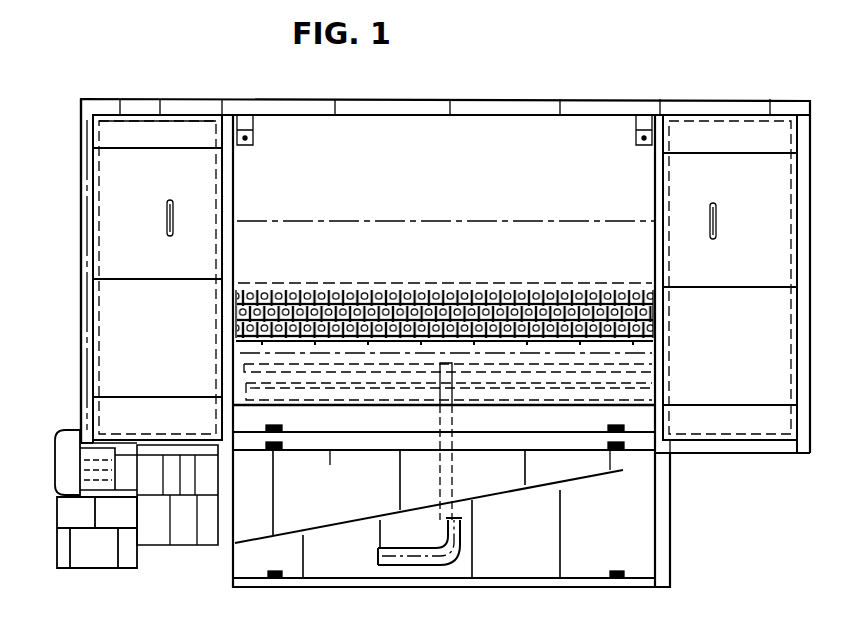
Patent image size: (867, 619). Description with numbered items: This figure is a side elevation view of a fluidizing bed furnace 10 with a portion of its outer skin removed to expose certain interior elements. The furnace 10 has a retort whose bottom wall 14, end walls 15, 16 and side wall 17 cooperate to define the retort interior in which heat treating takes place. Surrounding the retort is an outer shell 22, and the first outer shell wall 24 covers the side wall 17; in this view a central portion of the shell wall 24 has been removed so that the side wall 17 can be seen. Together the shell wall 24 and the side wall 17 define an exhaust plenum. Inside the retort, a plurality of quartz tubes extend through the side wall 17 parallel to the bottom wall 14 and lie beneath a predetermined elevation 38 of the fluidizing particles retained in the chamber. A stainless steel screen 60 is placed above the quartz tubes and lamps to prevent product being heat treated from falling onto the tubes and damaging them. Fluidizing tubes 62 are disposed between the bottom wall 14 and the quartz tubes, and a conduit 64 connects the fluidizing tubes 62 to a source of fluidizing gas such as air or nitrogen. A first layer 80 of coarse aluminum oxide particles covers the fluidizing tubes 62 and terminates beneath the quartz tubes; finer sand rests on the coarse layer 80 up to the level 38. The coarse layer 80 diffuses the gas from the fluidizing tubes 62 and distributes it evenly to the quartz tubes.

The furnace 10 is at (125, 84).
The bottom wall 14 is at (320, 437).
The end wall 15 is at (80, 196).
The end wall 16 is at (812, 232).
The side wall 17 is at (487, 136).
The outer shell 22 is at (137, 350).
The first outer shell wall 24 is at (160, 132).
The predetermined elevation 38 is at (476, 220).
The stainless steel screen 60 is at (514, 284).
The fluidizing tubes 62 is at (526, 372).
The conduit 64 is at (468, 480).
The first layer of coarse particles 80 is at (410, 353).